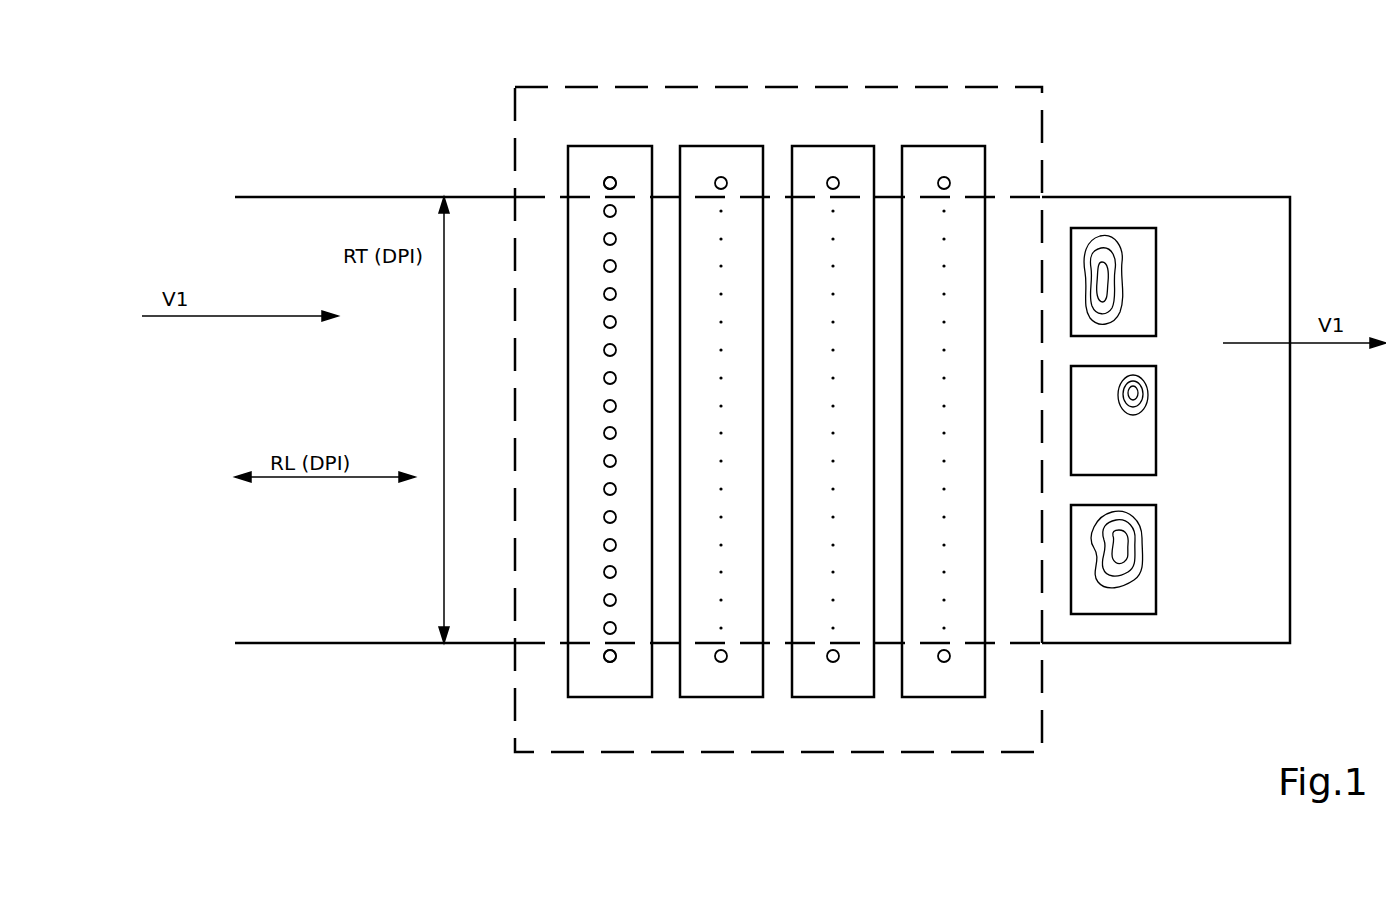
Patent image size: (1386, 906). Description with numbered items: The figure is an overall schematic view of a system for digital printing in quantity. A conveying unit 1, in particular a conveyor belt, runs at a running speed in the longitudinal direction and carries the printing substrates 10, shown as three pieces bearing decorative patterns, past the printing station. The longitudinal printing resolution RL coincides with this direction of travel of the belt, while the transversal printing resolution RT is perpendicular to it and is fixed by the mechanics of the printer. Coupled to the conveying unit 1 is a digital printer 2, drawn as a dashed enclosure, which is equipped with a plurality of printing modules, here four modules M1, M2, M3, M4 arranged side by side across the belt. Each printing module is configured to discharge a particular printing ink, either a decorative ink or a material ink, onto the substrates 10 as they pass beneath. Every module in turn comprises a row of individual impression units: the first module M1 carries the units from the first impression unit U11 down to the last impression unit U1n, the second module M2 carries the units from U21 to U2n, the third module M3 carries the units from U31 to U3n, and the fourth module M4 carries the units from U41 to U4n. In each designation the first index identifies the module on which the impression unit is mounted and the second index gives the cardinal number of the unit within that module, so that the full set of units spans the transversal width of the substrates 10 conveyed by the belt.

The conveying unit 1 is at (1266, 197).
The digital printer 2 is at (1043, 136).
The printing substrates 10 is at (1137, 228).
The first printing module M1 is at (607, 146).
The second printing module M2 is at (735, 146).
The third printing module M3 is at (850, 146).
The fourth printing module M4 is at (943, 146).
The first impression unit of the first printing module U11 is at (606, 179).
The first impression unit of the second printing module U21 is at (718, 180).
The first impression unit of the third printing module U31 is at (832, 178).
The first impression unit of the fourth printing module U41 is at (949, 178).
The last impression unit of the first printing module U1n is at (607, 661).
The last impression unit of the second printing module U2n is at (718, 661).
The last impression unit of the third printing module U3n is at (830, 661).
The last impression unit of the fourth printing module U4n is at (941, 661).